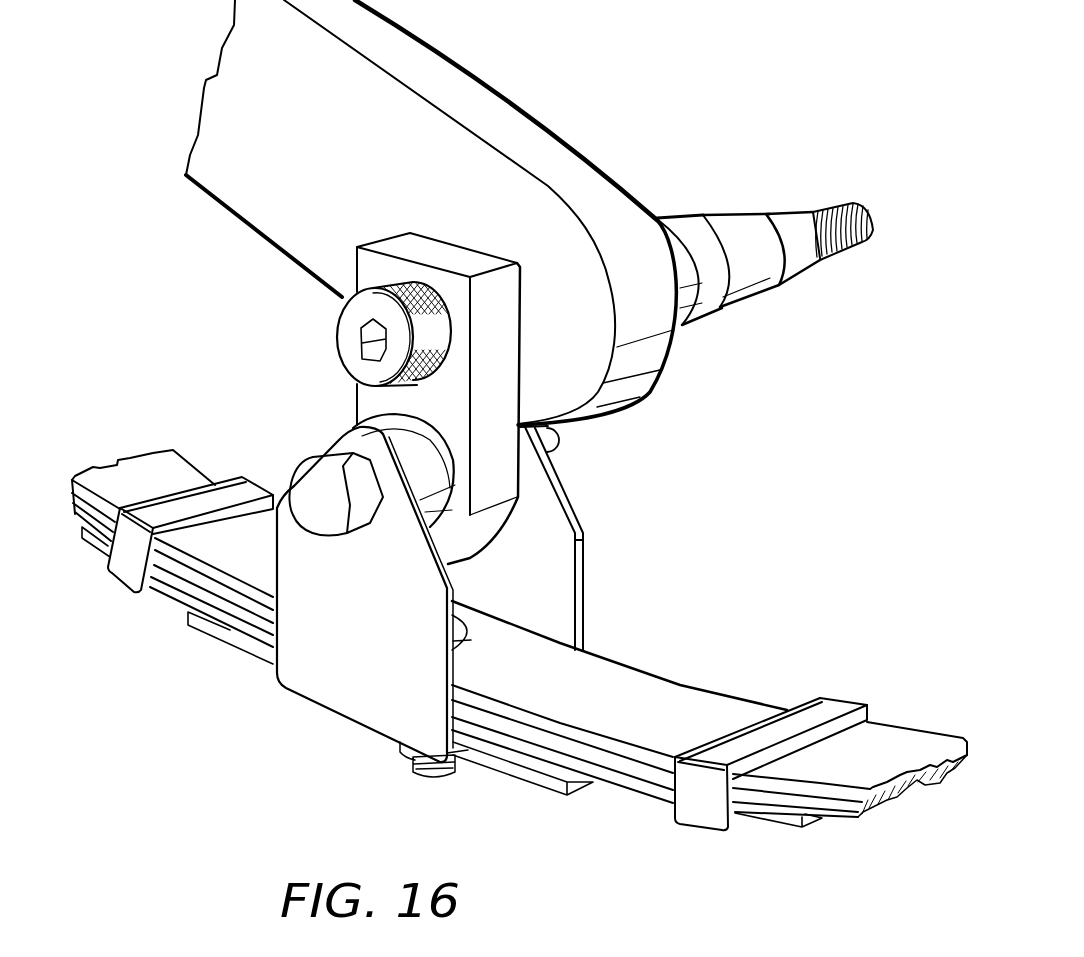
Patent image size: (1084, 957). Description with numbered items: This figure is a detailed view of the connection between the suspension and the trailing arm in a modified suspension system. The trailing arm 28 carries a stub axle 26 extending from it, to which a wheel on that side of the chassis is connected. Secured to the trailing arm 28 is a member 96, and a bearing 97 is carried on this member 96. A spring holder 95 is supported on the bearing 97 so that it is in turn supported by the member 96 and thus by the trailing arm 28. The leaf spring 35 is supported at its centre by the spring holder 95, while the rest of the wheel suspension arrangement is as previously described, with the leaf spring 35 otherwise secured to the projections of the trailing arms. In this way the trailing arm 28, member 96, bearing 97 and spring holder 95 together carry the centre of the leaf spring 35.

The trailing arm 28 is at (523, 135).
The stub axle 26 is at (730, 227).
The member 96 is at (393, 243).
The bearing 97 is at (440, 467).
The spring holder 95 is at (583, 583).
The leaf spring 35 is at (680, 717).